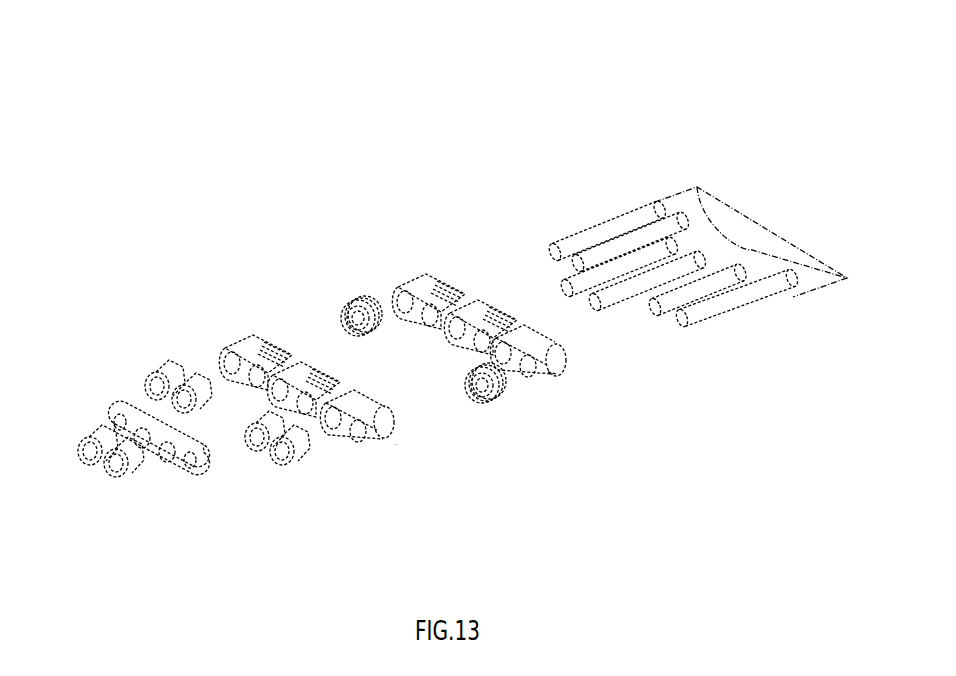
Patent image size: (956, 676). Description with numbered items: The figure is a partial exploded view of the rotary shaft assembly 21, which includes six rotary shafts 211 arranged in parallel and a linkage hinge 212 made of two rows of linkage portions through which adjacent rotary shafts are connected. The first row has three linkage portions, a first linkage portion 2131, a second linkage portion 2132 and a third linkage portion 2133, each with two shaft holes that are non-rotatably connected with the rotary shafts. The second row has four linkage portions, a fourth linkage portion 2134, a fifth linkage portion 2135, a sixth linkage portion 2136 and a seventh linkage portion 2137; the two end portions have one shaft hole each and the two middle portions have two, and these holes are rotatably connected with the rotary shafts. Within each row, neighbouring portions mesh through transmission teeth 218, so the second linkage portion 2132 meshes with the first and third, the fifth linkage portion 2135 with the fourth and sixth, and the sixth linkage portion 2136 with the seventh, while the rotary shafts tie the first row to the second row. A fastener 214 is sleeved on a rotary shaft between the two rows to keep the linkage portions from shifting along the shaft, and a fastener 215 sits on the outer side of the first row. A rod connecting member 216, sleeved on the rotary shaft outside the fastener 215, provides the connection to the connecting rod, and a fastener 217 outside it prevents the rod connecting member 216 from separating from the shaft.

The rotary shaft assembly 21 is at (522, 90).
The rotary shaft 211 is at (568, 240).
The linkage hinge 212 is at (563, 403).
The first linkage portion 2131 is at (220, 354).
The second linkage portion 2132 is at (255, 372).
The third linkage portion 2133 is at (272, 375).
The fourth linkage portion 2134 is at (403, 282).
The fifth linkage portion 2135 is at (462, 293).
The sixth linkage portion 2136 is at (503, 327).
The seventh linkage portion 2137 is at (550, 357).
The fastener 214 is at (463, 382).
The fastener 215 is at (318, 408).
The rod connecting member 216 is at (197, 467).
The fastener 217 is at (115, 480).
The transmission teeth 218 is at (558, 372).